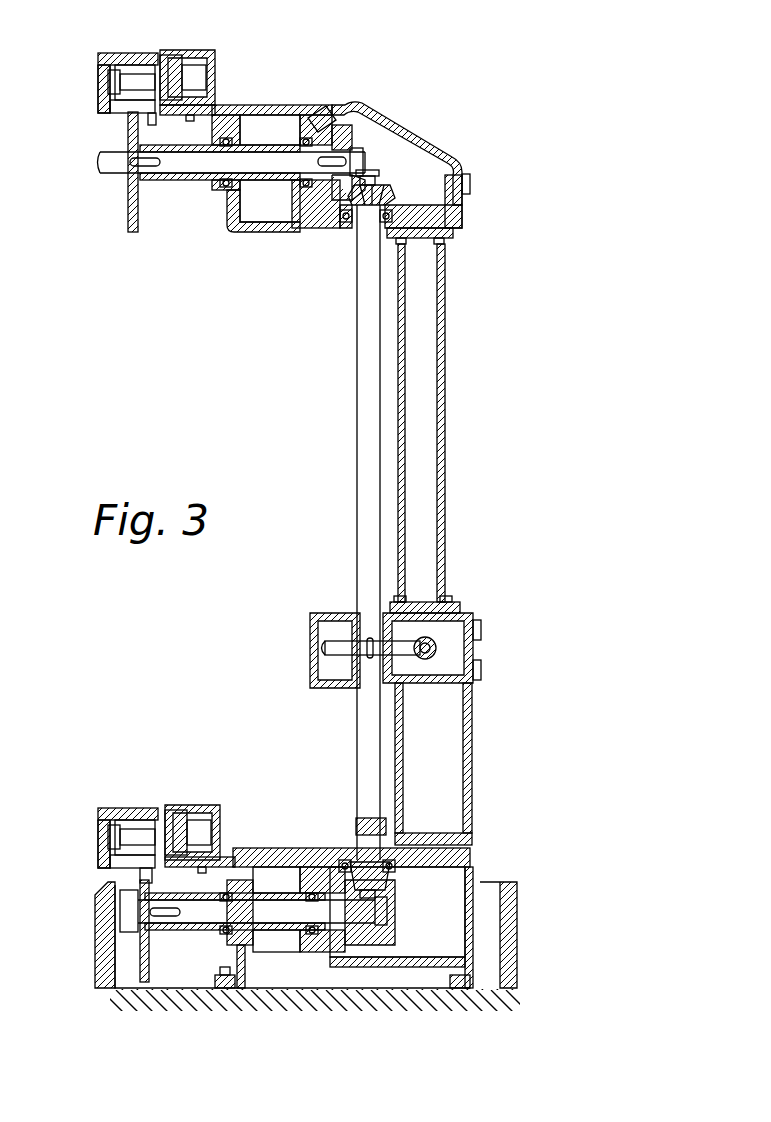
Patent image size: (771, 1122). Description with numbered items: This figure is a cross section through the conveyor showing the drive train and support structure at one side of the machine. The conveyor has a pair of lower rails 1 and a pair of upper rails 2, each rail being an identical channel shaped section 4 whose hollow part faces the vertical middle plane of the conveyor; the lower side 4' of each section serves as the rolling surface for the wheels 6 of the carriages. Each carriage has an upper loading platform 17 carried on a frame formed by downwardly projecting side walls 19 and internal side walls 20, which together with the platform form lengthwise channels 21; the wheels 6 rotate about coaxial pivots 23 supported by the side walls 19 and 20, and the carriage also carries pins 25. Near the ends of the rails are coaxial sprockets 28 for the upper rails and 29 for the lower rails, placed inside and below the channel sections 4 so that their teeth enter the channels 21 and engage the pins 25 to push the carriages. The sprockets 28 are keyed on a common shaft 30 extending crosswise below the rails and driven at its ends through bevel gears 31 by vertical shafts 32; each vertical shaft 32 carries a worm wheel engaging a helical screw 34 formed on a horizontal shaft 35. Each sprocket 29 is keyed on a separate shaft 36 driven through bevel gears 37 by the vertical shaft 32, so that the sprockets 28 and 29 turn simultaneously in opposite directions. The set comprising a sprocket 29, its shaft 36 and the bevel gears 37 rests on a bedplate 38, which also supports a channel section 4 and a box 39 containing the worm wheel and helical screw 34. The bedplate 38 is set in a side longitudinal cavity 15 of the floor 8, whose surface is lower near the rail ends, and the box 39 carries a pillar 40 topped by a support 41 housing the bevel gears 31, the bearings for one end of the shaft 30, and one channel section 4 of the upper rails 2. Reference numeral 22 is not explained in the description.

The lower rails 1 is at (213, 798).
The upper rails 2 is at (208, 50).
The channel shaped section 4 is at (208, 454).
The lower side of channel section 4' is at (201, 506).
The wheels 6 is at (172, 53).
The floor 8 is at (100, 905).
The side longitudinal cavity 15 is at (492, 885).
The upper loading platform 17 is at (108, 53).
The side walls 19 is at (152, 118).
The internal side walls 20 is at (118, 112).
The channels 21 is at (128, 67).
The cap 22 is at (98, 70).
The pivots 23 is at (138, 78).
The pins 25 is at (100, 100).
The sprockets for the upper rails 28 is at (136, 198).
The sprockets for the lower rails 29 is at (148, 950).
The common shaft 30 is at (193, 165).
The bevel gears 31 is at (385, 190).
The vertical shaft 32 is at (365, 324).
The helical screw 34 is at (430, 660).
The horizontal shaft 35 is at (330, 640).
The shaft 36 is at (276, 918).
The bevel gears 37 is at (360, 920).
The bedplate 38 is at (268, 850).
The box 39 is at (340, 690).
The pillar 40 is at (440, 450).
The support 41 is at (324, 232).